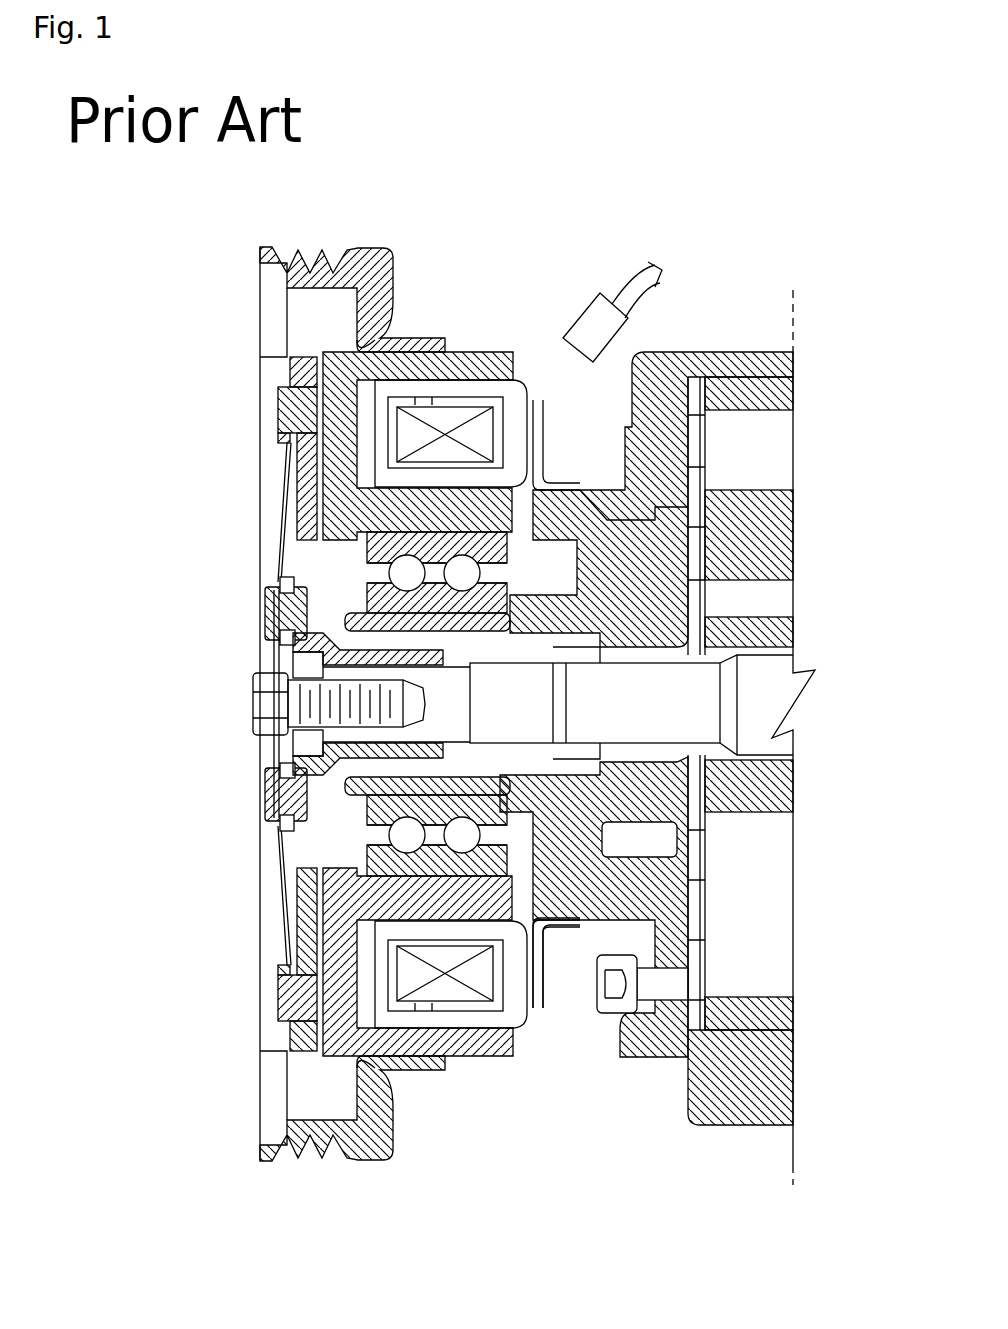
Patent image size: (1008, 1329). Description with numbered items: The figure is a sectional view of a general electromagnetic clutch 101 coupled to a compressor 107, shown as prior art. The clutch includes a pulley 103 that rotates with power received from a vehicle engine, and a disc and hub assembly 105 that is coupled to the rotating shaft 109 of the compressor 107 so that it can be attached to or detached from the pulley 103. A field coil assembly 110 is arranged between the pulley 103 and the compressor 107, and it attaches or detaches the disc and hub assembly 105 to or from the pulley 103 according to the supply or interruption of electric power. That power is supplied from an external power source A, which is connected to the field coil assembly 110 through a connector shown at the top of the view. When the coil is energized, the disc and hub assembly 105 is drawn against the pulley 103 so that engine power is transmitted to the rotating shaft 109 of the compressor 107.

The electromagnetic clutch 101 is at (312, 704).
The pulley 103 is at (246, 260).
The disc and hub assembly 105 is at (217, 704).
The field coil assembly 110 is at (378, 472).
The compressor 107 is at (670, 1078).
The rotating shaft 109 is at (678, 712).
The external power source A is at (583, 322).